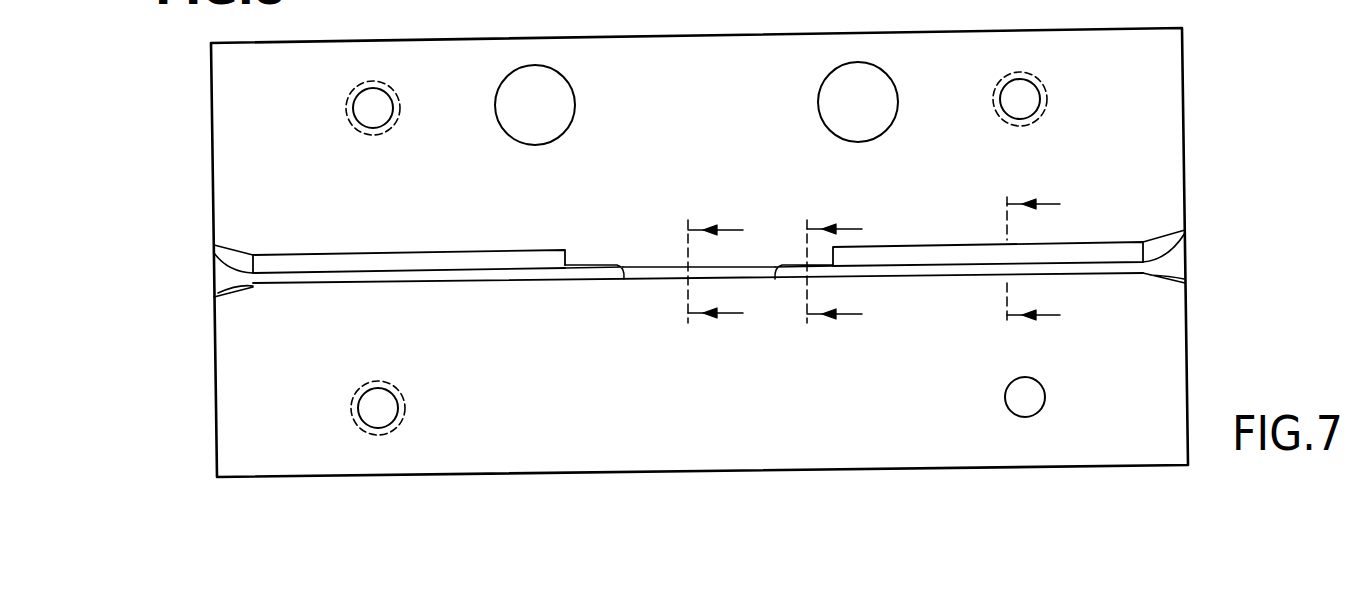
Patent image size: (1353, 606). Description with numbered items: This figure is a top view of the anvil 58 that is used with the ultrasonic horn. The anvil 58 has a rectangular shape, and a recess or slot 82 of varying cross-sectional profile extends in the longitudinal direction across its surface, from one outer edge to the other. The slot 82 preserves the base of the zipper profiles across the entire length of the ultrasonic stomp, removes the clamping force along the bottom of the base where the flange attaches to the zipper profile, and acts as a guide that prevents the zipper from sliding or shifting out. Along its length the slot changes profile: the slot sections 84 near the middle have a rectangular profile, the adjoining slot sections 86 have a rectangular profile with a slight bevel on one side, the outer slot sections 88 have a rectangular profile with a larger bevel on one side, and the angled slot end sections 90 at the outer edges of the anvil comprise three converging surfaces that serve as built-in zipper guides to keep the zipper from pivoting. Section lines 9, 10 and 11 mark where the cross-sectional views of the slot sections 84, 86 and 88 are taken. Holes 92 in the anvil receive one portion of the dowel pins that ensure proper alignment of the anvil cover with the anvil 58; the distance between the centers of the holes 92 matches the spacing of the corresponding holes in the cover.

The anvil 58 is at (1184, 98).
The recess or slot 82 is at (506, 295).
The slot sections 84 is at (655, 269).
The slot sections 86 is at (593, 278).
The slot sections 88 is at (363, 281).
The slot end sections 90 is at (225, 278).
The holes 92 is at (567, 78).
The section line 9- 9 is at (717, 275).
The section line 10- 10 is at (845, 276).
The section line 11- 11 is at (1043, 263).